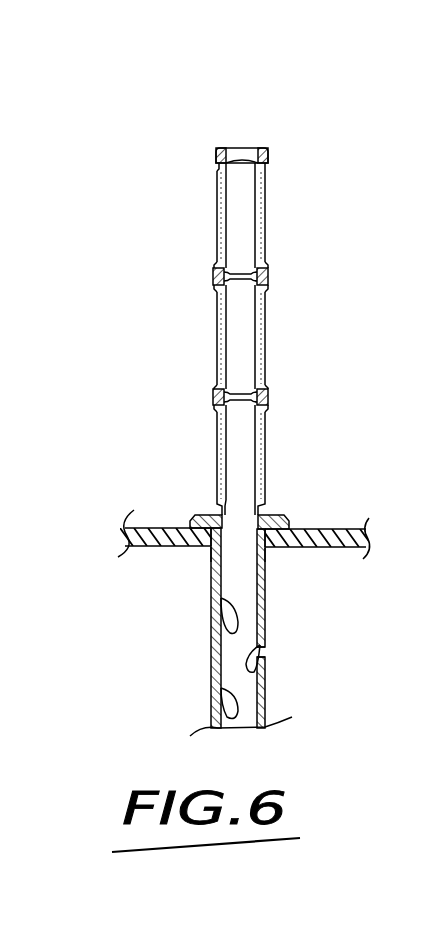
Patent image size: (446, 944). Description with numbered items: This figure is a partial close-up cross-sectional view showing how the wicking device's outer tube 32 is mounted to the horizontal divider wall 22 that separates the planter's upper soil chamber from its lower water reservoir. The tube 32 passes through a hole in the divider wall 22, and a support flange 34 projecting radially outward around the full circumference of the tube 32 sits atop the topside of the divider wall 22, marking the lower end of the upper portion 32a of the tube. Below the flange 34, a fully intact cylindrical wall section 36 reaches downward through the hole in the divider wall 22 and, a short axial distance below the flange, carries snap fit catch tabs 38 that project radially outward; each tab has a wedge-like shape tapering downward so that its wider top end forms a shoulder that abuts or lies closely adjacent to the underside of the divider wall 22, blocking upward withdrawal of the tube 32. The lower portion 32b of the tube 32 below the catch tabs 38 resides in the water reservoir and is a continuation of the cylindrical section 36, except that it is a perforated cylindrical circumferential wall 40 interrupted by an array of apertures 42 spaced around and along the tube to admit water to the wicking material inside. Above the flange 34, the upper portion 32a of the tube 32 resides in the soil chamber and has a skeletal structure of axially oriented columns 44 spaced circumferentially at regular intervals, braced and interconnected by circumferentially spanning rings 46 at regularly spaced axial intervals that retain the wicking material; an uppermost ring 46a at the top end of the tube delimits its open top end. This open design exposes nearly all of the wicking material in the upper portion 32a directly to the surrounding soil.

The divider wall 22 is at (322, 530).
The outer tube 32 is at (302, 194).
The upper portion of the tube 32a is at (271, 336).
The lower portion of the tube 32b is at (276, 643).
The support flange 34 is at (281, 527).
The intact cylindrical wall section 36 is at (208, 544).
The snap fit catch tabs 38 is at (209, 556).
The perforated cylindrical circumferential wall 40 is at (267, 691).
The apertures 42 is at (231, 711).
The axially oriented columns 44 is at (259, 231).
The circumferentially spanning rings 46 is at (267, 279).
The uppermost ring 46a is at (236, 154).